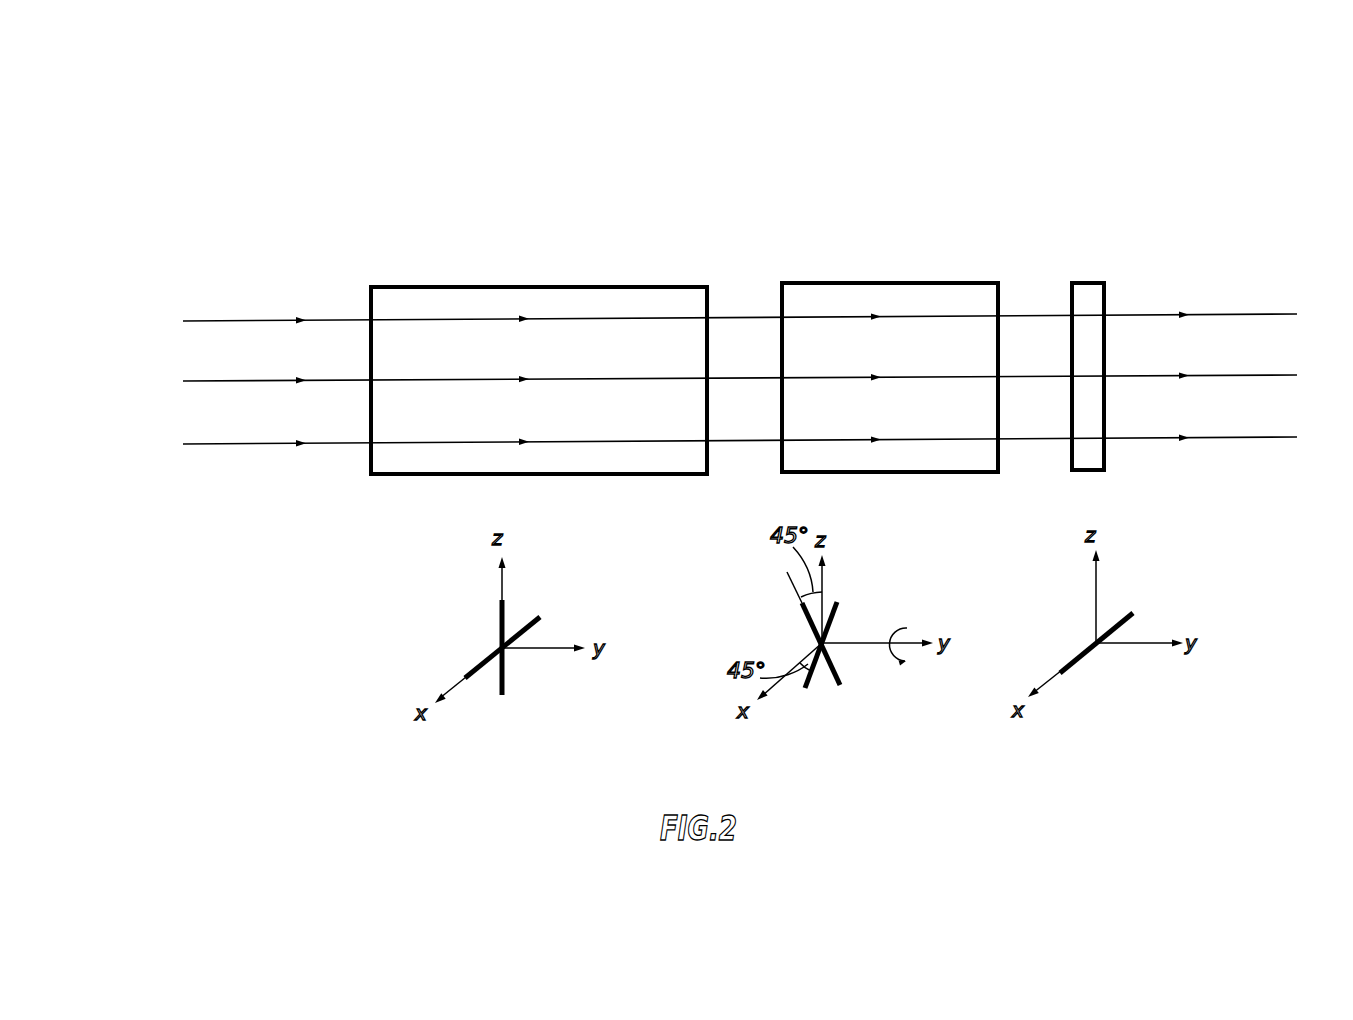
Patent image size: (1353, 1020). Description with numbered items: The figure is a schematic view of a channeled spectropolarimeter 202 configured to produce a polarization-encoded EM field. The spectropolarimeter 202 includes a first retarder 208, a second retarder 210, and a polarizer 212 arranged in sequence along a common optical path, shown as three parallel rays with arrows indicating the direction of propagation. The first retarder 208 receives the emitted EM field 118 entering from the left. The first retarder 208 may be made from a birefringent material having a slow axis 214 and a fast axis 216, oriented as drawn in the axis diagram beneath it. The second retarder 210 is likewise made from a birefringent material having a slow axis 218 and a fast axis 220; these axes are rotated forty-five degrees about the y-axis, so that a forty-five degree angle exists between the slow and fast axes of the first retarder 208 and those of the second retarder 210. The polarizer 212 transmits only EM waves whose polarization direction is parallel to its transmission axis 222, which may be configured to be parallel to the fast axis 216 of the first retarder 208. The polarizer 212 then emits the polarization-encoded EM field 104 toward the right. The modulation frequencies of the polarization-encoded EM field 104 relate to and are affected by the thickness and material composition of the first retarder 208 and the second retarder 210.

The spectropolarimeter 202 is at (1137, 177).
The emitted EM field 118 is at (249, 444).
The polarization-encoded EM field 104 is at (1234, 437).
The first retarder 208 is at (468, 285).
The second retarder 210 is at (828, 283).
The polarizer 212 is at (1088, 282).
The slow axis 214 is at (504, 611).
The fast axis 216 is at (478, 668).
The slow axis 218 is at (800, 617).
The fast axis 220 is at (807, 686).
The transmission axis 222 is at (1117, 622).